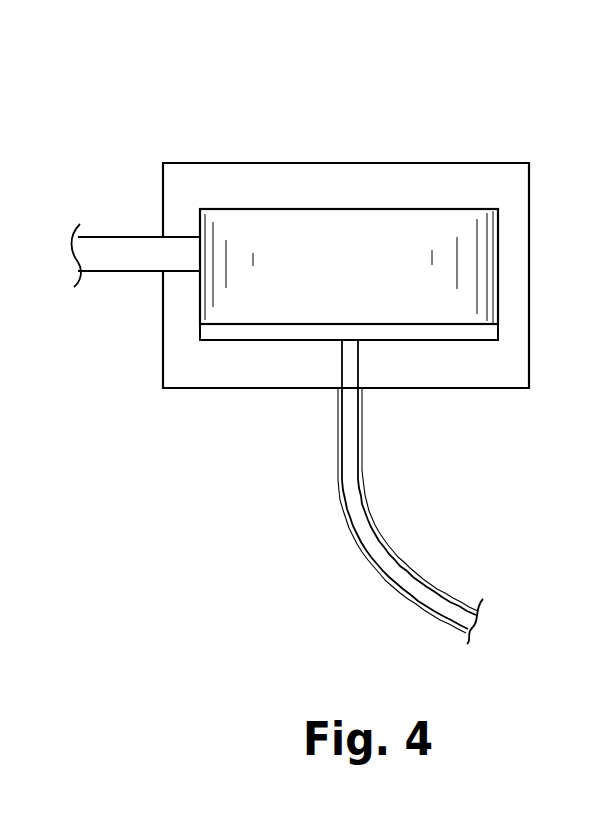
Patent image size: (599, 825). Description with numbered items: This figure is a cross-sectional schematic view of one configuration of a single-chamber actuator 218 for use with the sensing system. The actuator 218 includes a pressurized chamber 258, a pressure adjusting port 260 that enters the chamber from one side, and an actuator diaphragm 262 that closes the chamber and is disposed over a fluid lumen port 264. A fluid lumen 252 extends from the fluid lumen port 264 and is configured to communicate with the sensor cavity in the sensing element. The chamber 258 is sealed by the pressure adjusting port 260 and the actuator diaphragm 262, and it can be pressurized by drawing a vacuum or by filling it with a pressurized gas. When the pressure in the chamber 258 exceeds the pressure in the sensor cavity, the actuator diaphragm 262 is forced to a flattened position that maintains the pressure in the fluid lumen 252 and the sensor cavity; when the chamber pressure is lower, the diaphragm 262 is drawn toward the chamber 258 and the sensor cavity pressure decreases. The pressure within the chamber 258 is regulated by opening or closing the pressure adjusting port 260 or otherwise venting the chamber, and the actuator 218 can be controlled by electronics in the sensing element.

The actuator 218 is at (244, 120).
The pressurized chamber 258 is at (381, 242).
The pressure adjusting port 260 is at (90, 274).
The actuator diaphragm 262 is at (421, 341).
The fluid lumen port 264 is at (340, 372).
The fluid lumen 252 is at (357, 544).